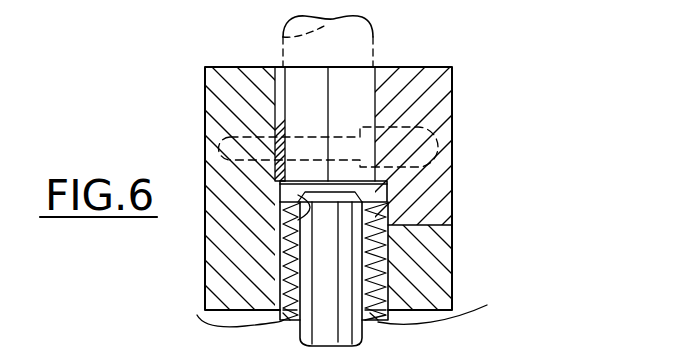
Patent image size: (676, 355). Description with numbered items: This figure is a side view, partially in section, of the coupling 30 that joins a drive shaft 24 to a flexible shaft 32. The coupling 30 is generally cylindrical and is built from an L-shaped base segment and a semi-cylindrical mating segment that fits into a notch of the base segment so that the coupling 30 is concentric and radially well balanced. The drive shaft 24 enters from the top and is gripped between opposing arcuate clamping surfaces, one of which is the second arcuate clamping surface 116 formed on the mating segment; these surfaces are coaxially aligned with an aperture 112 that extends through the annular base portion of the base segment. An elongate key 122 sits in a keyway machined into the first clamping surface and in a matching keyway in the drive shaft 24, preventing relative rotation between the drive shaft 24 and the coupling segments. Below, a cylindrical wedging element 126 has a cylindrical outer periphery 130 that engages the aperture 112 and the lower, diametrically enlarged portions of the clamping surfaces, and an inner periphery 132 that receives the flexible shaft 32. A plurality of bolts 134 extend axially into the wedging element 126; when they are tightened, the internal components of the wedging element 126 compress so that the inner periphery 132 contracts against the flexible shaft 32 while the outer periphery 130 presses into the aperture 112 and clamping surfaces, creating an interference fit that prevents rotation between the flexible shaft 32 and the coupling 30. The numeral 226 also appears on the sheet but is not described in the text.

The drive shaft 24 is at (375, 35).
The coupling 30 is at (532, 176).
The flexible shaft 32 is at (316, 272).
The aperture 112 is at (292, 243).
The second arcuate clamping surface 116 is at (373, 97).
The elongate key 122 is at (275, 84).
The cylindrical wedging element 126 is at (385, 287).
The cylindrical outer periphery 130 is at (285, 232).
The inner periphery 132 is at (314, 192).
The bolts 134 is at (348, 302).
The numeral 226 is at (29, 342).